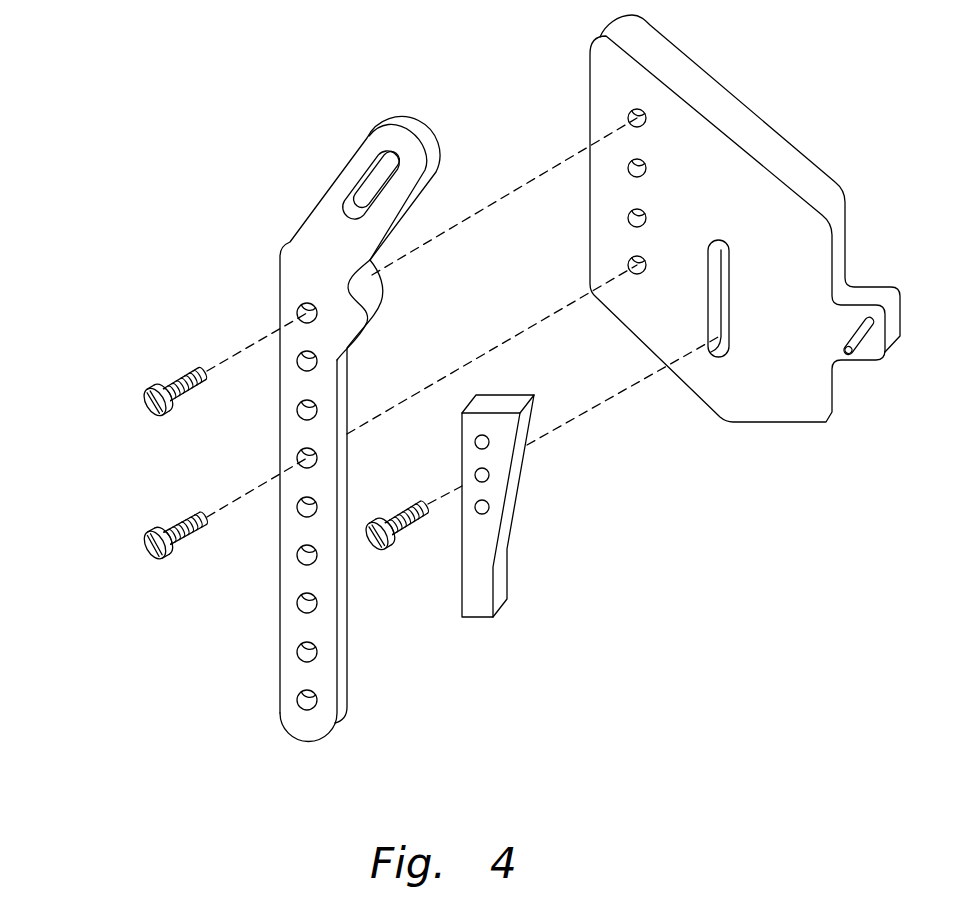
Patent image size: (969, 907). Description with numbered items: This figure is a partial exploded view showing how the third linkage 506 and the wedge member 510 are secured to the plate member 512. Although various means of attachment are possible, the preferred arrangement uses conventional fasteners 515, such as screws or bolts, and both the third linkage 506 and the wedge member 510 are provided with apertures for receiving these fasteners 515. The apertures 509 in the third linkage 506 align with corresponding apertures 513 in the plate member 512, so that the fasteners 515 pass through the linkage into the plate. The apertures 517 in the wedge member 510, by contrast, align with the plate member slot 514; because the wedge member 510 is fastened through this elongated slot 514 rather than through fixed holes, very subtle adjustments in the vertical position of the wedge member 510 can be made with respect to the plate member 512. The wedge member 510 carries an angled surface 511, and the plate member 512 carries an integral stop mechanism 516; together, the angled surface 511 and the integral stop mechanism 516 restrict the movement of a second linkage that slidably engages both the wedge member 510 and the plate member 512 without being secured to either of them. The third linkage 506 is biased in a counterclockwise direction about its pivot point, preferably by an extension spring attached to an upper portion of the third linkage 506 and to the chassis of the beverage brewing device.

The third linkage 506 is at (322, 247).
The apertures 509 is at (303, 557).
The wedge member 510 is at (477, 597).
The angled surface 511 is at (520, 460).
The plate member 512 is at (770, 227).
The apertures 513 is at (642, 165).
The plate member slot 514 is at (722, 338).
The fasteners 515 is at (142, 392).
The integral stop mechanism 516 is at (843, 352).
The apertures 517 is at (489, 478).